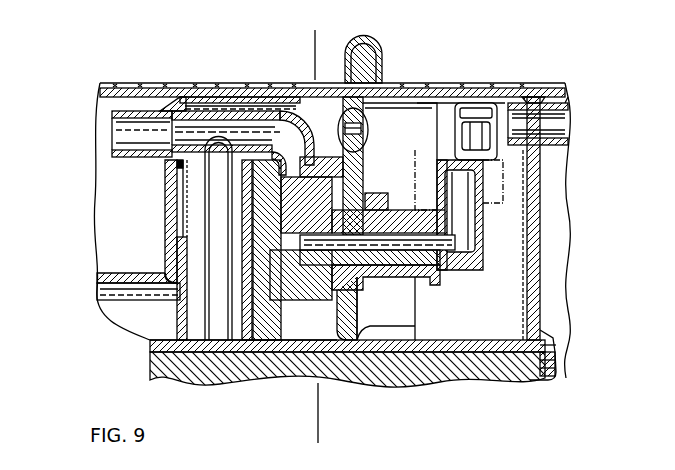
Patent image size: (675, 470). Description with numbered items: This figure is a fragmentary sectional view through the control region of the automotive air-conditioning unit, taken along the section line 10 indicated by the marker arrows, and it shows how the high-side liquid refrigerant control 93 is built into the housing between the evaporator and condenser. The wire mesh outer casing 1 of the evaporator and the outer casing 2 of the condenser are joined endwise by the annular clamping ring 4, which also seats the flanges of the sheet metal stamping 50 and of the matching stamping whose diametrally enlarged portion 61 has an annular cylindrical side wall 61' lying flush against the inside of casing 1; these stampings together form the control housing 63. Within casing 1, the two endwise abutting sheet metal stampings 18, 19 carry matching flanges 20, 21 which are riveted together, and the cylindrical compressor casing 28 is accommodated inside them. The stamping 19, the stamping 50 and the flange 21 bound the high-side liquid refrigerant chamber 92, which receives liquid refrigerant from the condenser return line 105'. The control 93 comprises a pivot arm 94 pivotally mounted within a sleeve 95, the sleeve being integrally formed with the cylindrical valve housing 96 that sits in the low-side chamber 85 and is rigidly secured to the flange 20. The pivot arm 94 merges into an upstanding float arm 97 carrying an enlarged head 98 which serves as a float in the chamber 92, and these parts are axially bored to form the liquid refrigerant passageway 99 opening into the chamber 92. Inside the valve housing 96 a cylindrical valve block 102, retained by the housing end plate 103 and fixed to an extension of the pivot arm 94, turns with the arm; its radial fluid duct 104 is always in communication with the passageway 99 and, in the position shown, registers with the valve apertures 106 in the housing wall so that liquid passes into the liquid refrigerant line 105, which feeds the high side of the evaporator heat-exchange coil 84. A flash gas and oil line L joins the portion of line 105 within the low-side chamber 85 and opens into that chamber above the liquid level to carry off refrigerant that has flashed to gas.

The cylindrical outer casing 1 is at (159, 83).
The cylindrical outer casing 2 is at (560, 83).
The annular clamping ring 4 is at (372, 54).
The section line 10 is at (305, 37).
The sheet metal stamping 18 is at (343, 100).
The sheet metal stamping 19 is at (368, 160).
The outwardly extending flange 20 is at (150, 343).
The outwardly extending flange 21 is at (547, 360).
The cylindrical compressor casing 28 is at (490, 375).
The sheet metal stamping 50 is at (550, 342).
The diametrally enlarged portion 61 is at (137, 221).
The annular cylindrical side wall 61' is at (148, 248).
The control housing 63 is at (293, 108).
The evaporator heat-exchange coil 84 is at (120, 135).
The low-side chamber 85 is at (300, 345).
The high-side liquid refrigerant chamber 92 is at (530, 300).
The high-side liquid refrigerant control 93 is at (488, 218).
The pivot arm 94 is at (399, 277).
The sleeve 95 is at (432, 276).
The cylindrical valve housing 96 is at (262, 335).
The float arm 97 is at (480, 192).
The enlarged head 98 is at (466, 125).
The liquid refrigerant passageway 99 is at (468, 240).
The cylindrical valve block 102 is at (260, 288).
The housing end plate 103 is at (180, 250).
The radial fluid duct 104 is at (180, 165).
The liquid refrigerant line 105 is at (243, 111).
The condenser return line 105' is at (567, 114).
The valve apertures 106 is at (343, 155).
The flash gas and oil line L is at (200, 332).